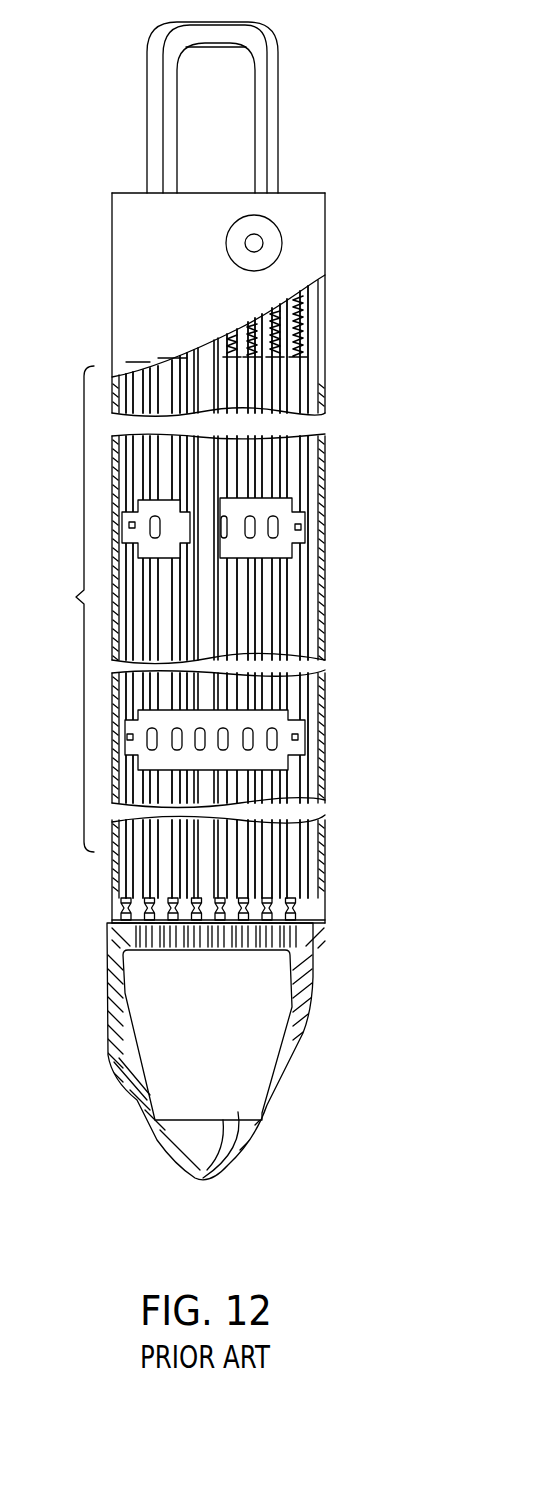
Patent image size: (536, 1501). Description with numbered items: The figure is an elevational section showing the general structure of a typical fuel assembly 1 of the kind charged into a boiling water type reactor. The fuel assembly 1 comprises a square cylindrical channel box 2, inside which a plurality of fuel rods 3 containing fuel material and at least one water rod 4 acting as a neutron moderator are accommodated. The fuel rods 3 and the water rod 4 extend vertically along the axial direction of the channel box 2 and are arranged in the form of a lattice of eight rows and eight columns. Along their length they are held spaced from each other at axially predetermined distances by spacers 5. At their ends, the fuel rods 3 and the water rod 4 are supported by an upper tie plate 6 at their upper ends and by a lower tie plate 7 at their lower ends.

The fuel assembly 1 is at (358, 190).
The channel box 2 is at (325, 607).
The fuel rods 3 is at (320, 393).
The water rod 4 is at (215, 470).
The spacers 5 is at (325, 488).
The upper tie plate 6 is at (310, 298).
The lower tie plate 7 is at (305, 1025).